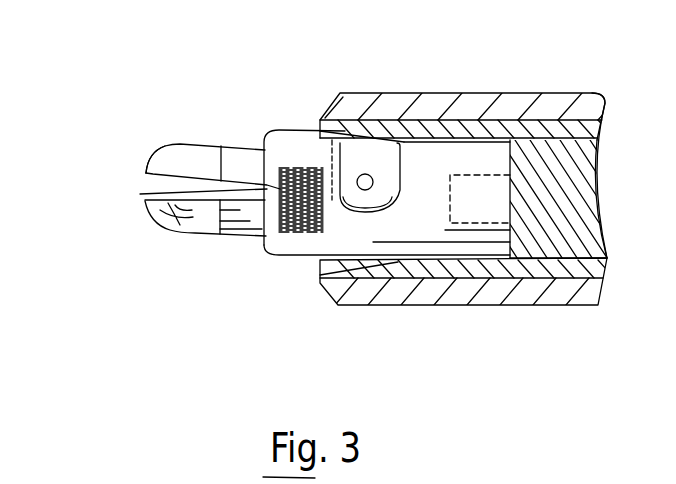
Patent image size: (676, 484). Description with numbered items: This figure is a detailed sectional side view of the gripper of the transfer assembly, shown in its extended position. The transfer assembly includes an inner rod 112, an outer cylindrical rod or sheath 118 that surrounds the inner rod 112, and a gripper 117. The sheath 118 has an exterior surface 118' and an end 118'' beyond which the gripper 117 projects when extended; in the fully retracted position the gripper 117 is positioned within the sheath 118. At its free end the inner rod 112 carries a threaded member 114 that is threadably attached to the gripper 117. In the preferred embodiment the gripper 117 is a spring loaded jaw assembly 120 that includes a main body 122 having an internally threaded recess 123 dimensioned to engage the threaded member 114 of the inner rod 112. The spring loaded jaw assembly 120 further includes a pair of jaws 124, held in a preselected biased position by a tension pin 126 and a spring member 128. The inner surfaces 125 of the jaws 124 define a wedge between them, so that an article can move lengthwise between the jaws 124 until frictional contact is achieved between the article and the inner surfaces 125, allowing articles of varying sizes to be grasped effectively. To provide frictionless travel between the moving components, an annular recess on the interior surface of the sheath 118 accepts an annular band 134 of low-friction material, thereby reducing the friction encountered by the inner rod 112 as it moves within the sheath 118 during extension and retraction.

The inner rod 112 is at (542, 163).
The threaded member 114 is at (481, 224).
The gripper 117 is at (164, 302).
The sheath 118 is at (471, 139).
The exterior surface of sheath 118' is at (588, 85).
The end of sheath 118'' is at (452, 315).
The spring loaded jaw assembly 120 is at (251, 98).
The main body 122 is at (443, 150).
The internally threaded recess 123 is at (518, 262).
The jaws 124 is at (183, 160).
The inner surfaces of jaws 125 is at (160, 177).
The tension pin 126 is at (362, 177).
The spring member 128 is at (290, 225).
The annular band 134 is at (421, 260).